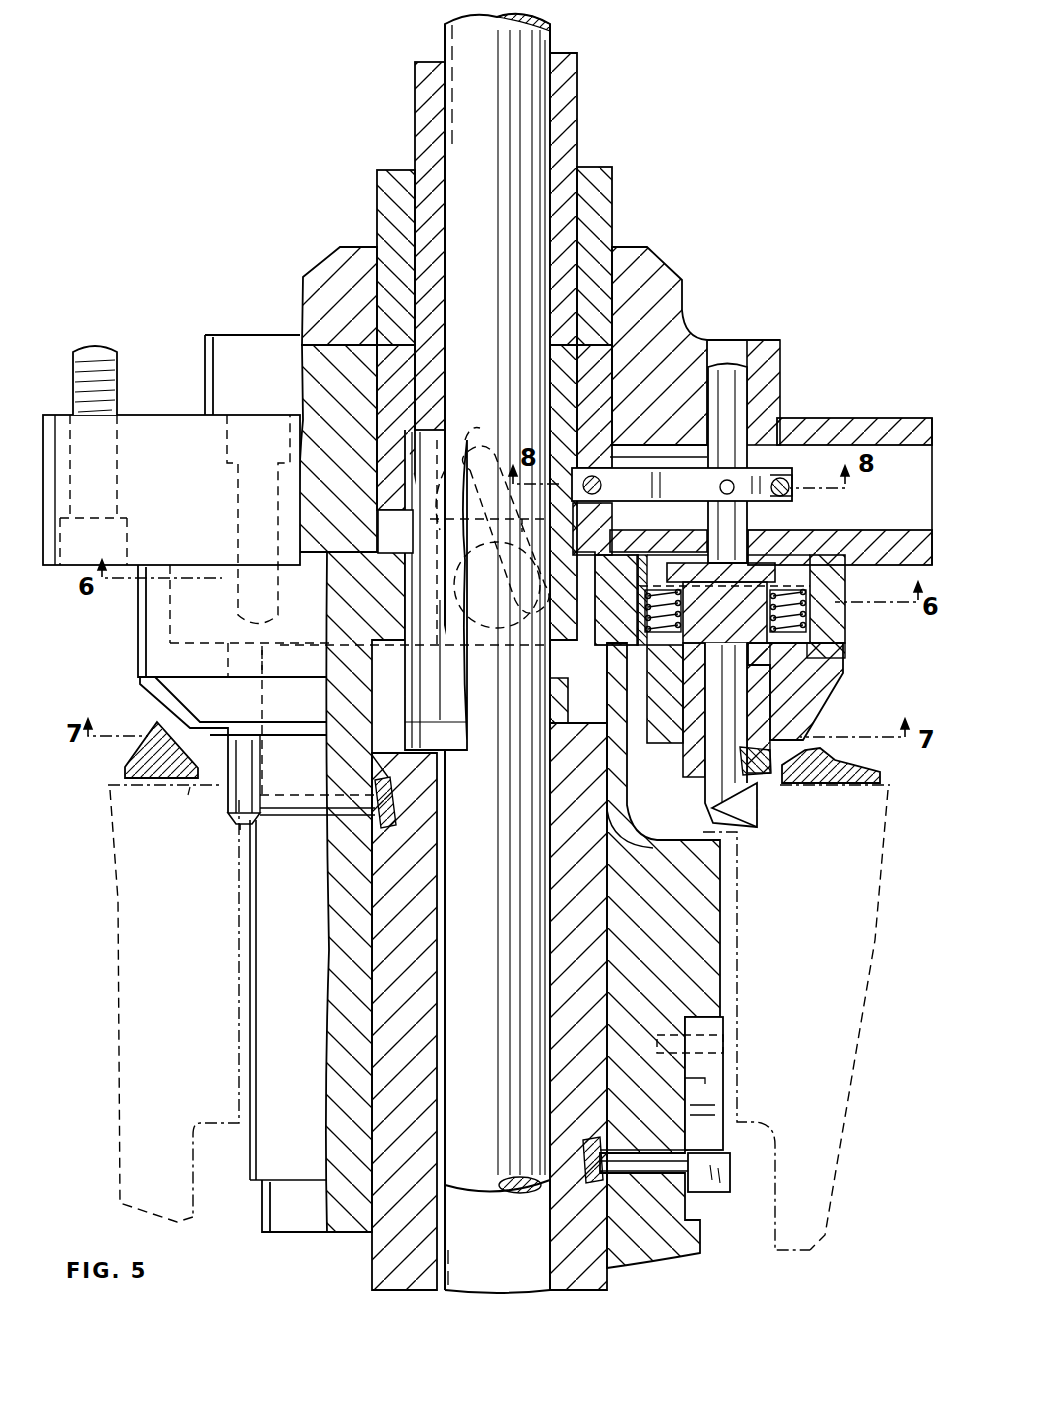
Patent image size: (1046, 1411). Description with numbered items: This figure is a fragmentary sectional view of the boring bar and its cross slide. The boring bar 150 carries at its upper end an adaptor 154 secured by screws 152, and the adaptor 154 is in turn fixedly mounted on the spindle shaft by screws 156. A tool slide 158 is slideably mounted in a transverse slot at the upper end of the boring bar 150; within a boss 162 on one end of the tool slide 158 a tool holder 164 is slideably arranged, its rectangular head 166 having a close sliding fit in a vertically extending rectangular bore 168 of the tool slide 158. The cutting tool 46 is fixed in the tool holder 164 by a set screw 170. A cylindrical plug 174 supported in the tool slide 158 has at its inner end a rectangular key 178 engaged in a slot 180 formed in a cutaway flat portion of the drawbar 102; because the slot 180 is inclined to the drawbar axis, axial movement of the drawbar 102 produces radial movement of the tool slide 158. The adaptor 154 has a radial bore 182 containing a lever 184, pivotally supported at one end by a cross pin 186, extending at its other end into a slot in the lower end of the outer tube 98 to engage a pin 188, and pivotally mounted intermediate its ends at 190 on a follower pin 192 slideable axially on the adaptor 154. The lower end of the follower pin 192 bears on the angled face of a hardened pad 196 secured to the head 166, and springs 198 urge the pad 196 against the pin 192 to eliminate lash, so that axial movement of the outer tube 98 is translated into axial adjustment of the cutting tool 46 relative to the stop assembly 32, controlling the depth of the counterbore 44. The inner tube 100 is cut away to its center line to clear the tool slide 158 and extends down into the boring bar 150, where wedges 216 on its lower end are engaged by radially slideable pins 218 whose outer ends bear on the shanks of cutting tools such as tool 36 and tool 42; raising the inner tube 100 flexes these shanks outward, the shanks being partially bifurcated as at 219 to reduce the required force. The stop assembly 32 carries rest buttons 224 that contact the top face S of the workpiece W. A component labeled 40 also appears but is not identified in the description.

The drawbar 102 is at (552, 38).
The inner tube 100 is at (577, 88).
The outer tube 98 is at (610, 200).
The adaptor 154 is at (676, 284).
The follower pin 192 is at (727, 368).
The screws 156 is at (112, 364).
The radial bore 182 is at (884, 462).
The slot 180 is at (487, 465).
The pin 188 is at (600, 488).
The lever 184 is at (772, 477).
The cross pin 186 is at (790, 492).
The screws 152 is at (247, 503).
The cylindrical plug 174 is at (522, 528).
The rectangular bore 168 is at (650, 563).
The pivot 190 is at (733, 493).
The rectangular head 166 is at (790, 580).
The hardened pad 196 is at (713, 577).
The springs 198 is at (800, 617).
The rectangular key 178 is at (500, 608).
The tool slide 158 is at (613, 628).
The boss 162 is at (800, 699).
The stop assembly 32 is at (135, 765).
The tool holder 164 is at (703, 763).
The set screw 170 is at (770, 774).
The rest buttons 224 is at (150, 787).
The top face S is at (190, 788).
The cutting tool 42 is at (233, 824).
The pins 218 is at (337, 817).
The wedges 216 is at (387, 818).
The cutting tool 46 is at (752, 812).
The counterbore 44 is at (740, 836).
The workpiece W is at (135, 896).
The housing 40 is at (738, 977).
The bifurcated portion 219 is at (700, 1087).
The cutting tool 36 is at (728, 1172).
The boring bar 150 is at (253, 1163).